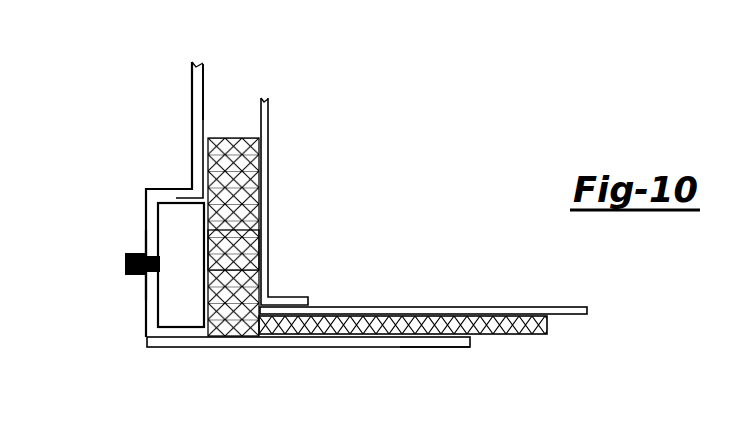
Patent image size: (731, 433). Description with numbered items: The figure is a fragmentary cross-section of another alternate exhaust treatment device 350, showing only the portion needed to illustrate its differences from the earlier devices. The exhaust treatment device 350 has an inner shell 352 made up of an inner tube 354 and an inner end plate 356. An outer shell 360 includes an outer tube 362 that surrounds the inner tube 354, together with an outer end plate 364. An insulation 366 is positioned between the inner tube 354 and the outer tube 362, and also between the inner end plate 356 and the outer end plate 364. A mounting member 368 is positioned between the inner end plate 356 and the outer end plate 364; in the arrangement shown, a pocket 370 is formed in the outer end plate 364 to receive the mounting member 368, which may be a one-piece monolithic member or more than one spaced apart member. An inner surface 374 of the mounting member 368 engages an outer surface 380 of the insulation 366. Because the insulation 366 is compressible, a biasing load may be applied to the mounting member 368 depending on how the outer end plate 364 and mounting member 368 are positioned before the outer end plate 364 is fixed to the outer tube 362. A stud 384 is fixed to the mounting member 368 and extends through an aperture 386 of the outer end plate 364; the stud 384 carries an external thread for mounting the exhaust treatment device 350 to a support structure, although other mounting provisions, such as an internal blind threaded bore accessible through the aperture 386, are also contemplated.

The exhaust treatment device 350 is at (147, 175).
The inner shell 352 is at (453, 300).
The inner tube 354 is at (430, 306).
The inner end plate 356 is at (268, 190).
The outer shell 360 is at (156, 358).
The outer tube 362 is at (425, 348).
The outer end plate 364 is at (145, 227).
The insulation 366 is at (242, 168).
The mounting member 368 is at (173, 310).
The pocket 370 is at (177, 211).
The inner surface 374 is at (237, 253).
The outer surface 380 is at (208, 150).
The stud 384 is at (125, 260).
The aperture 386 is at (141, 277).